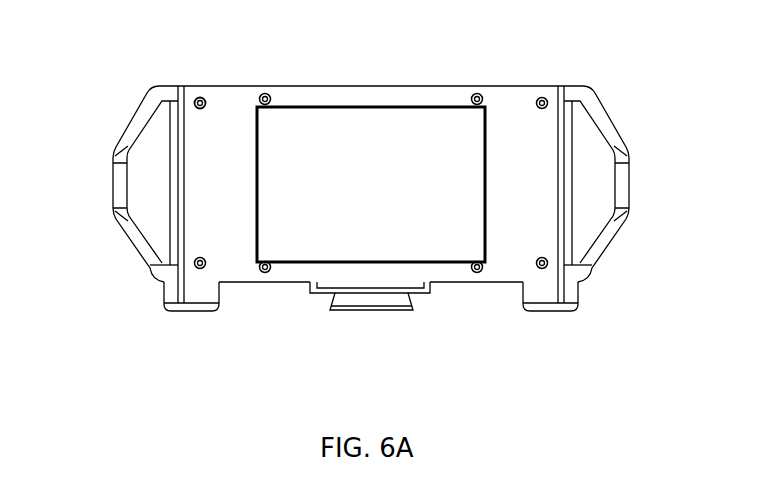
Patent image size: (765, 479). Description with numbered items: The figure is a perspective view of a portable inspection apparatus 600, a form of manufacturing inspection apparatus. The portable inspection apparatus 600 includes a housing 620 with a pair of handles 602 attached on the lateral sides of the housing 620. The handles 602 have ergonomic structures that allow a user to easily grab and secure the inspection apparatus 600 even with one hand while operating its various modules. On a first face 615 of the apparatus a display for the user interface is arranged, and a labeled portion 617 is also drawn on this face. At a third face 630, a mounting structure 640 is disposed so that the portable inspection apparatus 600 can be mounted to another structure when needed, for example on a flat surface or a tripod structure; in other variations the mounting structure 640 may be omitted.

The portable inspection apparatus 600 is at (687, 95).
The handles 602 is at (110, 182).
The first face 615 is at (215, 238).
The housing portion 617 is at (503, 93).
The housing 620 is at (223, 93).
The third face 630 is at (245, 281).
The mounting structure 640 is at (370, 312).